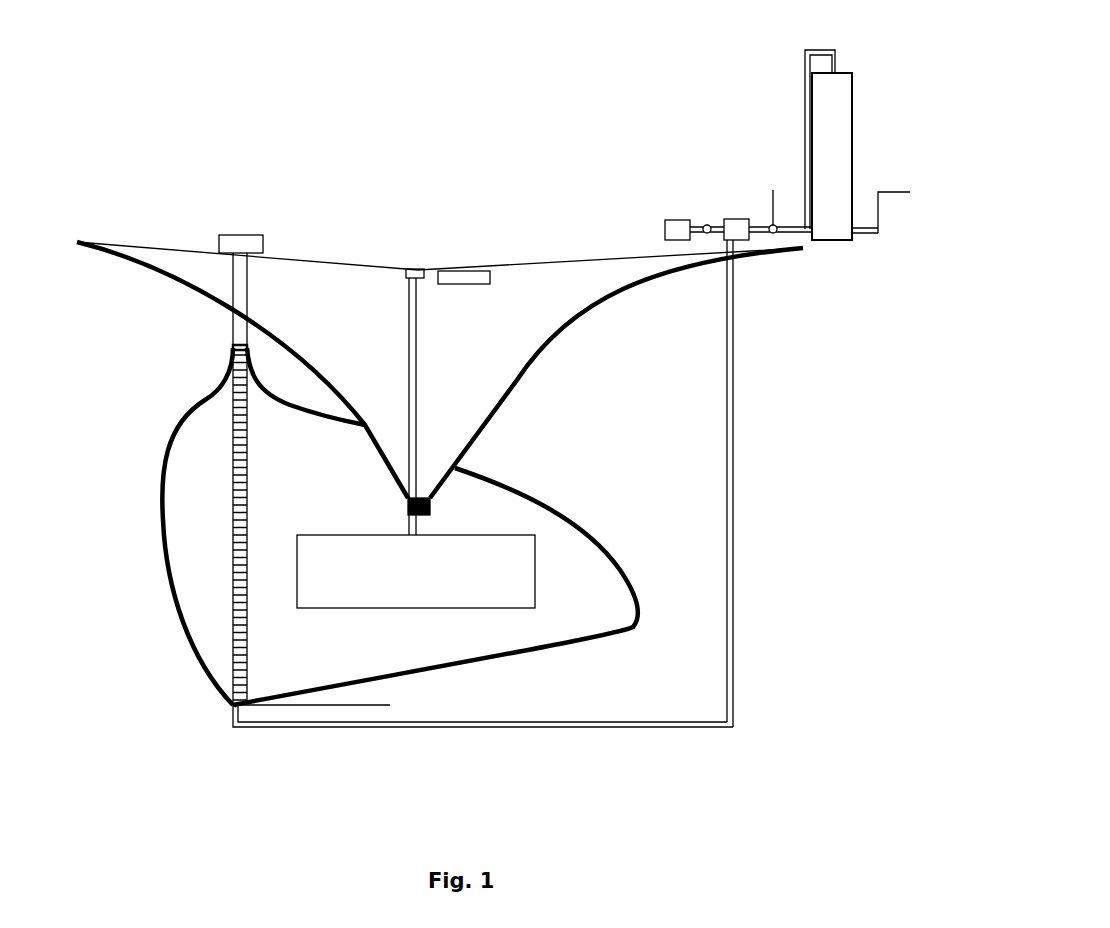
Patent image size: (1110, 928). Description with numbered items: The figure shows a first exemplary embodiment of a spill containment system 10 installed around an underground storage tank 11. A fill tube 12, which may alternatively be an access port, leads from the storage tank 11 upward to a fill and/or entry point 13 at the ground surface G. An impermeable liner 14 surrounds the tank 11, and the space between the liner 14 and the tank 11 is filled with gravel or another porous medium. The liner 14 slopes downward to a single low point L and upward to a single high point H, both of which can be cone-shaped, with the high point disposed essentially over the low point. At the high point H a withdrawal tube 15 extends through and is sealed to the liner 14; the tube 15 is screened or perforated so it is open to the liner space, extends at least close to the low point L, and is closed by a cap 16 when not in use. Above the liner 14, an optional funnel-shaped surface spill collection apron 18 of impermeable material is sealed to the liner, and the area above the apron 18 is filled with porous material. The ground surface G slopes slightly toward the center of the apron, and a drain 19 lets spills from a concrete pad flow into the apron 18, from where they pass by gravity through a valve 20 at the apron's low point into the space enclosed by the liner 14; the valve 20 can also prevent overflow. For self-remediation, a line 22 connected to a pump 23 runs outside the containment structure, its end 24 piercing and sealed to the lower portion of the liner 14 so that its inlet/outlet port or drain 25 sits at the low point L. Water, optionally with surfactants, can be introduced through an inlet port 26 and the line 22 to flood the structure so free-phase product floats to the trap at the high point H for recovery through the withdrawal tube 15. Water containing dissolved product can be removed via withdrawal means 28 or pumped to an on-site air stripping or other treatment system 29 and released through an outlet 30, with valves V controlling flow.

The containment system 10 is at (393, 132).
The underground storage tank 11 is at (355, 535).
The fill tube 12 is at (422, 356).
The fill and/or entry point 13 is at (418, 268).
The impermeable liner 14 is at (180, 455).
The withdrawal tube 15 is at (230, 540).
The cap 16 is at (242, 235).
The surface spill collection apron 18 is at (515, 385).
The drain 19 is at (468, 270).
The valve 20 is at (432, 507).
The line 22 is at (727, 512).
The pump 23 is at (737, 219).
The end of the line 24 is at (237, 705).
The inlet/outlet port or drain 25 is at (233, 705).
The inlet port 26 is at (668, 220).
The withdrawal means 28 is at (773, 190).
The treatment system 29 is at (837, 123).
The outlet 30 is at (888, 192).
The ground surface G is at (313, 260).
The high point H is at (233, 345).
The low point L is at (247, 702).
The valve V is at (776, 232).